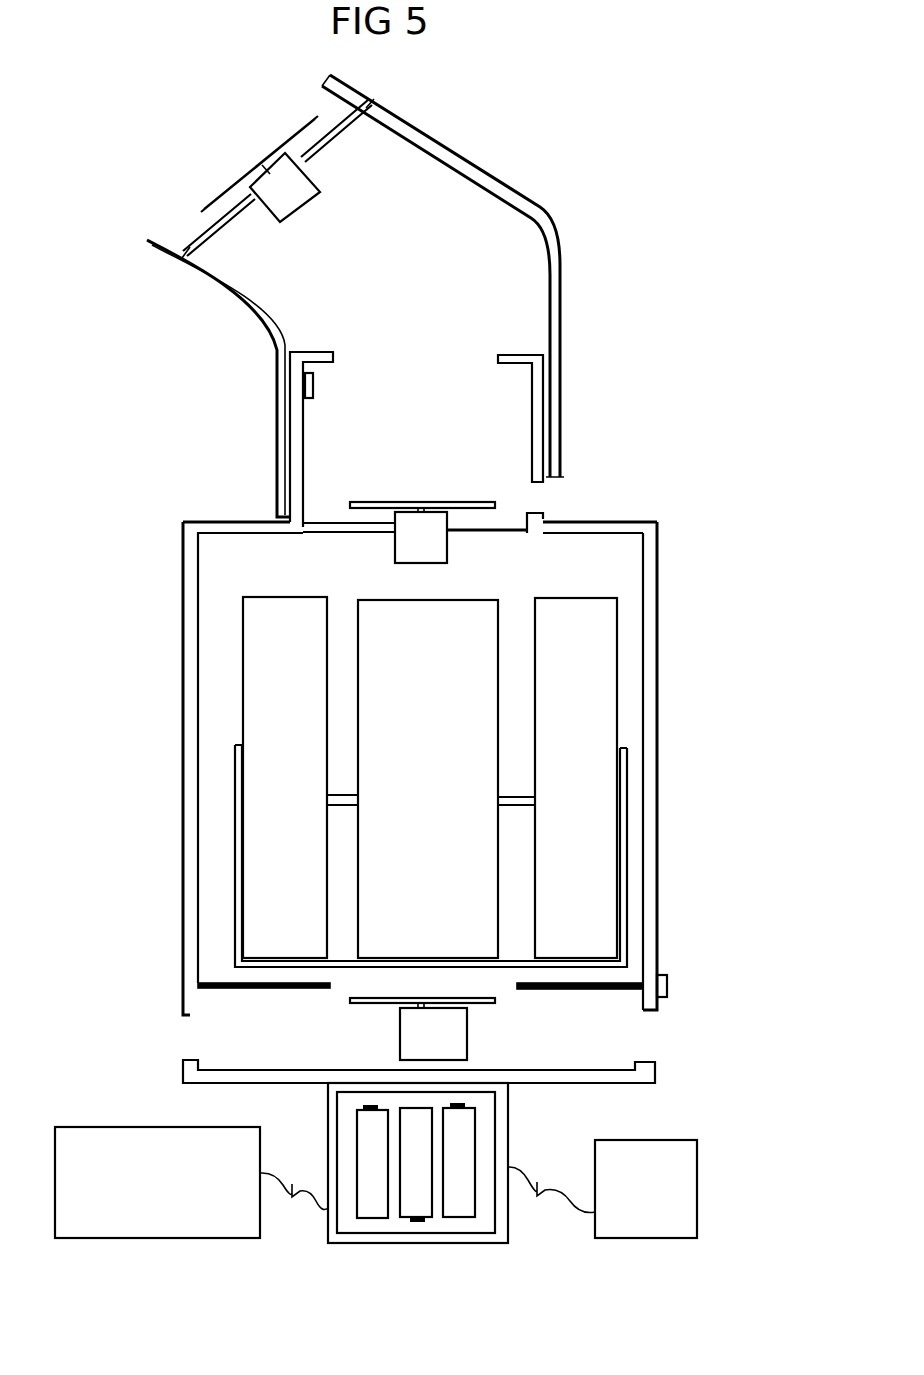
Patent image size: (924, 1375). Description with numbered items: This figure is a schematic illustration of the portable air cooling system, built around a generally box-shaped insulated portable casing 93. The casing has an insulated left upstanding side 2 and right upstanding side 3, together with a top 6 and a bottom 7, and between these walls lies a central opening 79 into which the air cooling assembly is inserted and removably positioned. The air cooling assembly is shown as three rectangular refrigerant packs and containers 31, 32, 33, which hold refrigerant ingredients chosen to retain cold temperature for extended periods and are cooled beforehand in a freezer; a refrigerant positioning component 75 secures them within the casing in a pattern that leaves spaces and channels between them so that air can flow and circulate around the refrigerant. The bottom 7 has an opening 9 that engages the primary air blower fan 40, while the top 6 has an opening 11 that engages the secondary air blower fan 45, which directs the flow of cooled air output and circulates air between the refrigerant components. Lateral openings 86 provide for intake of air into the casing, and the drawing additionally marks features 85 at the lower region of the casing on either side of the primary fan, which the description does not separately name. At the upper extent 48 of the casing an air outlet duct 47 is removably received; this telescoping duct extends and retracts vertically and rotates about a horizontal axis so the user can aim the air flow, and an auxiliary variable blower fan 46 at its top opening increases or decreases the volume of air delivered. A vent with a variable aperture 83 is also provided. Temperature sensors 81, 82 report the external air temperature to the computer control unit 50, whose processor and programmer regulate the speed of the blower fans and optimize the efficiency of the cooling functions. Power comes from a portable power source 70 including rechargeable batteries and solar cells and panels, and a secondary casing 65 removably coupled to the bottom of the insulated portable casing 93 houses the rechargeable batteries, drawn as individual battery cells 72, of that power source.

The left upstanding side 2 is at (183, 698).
The right upstanding side 3 is at (660, 657).
The top 6 is at (237, 517).
The bottom 7 is at (630, 1090).
The bottom opening 9 is at (502, 983).
The top opening 11 is at (328, 547).
The rectangular refrigerant pack 31 is at (587, 714).
The rectangular refrigerant pack 32 is at (437, 722).
The rectangular refrigerant pack 33 is at (291, 712).
The primary air blower fan 40 is at (447, 1049).
The secondary air blower fan 45 is at (435, 555).
The auxiliary variable blower fan 46 is at (275, 193).
The air outlet duct 47 is at (561, 287).
The upper extent 48 is at (540, 420).
The computer control unit 50 is at (656, 1207).
The secondary casing 65 is at (515, 1130).
The portable power source 70 is at (152, 1201).
The battery cell 72 is at (380, 1138).
The refrigerant positioning component 75 is at (627, 827).
The central opening 79 is at (623, 568).
The temperature sensor 81 is at (305, 383).
The temperature sensor 82 is at (667, 985).
The variable aperture 83 is at (555, 497).
The air gap 85 is at (740, 1010).
The lateral openings 86 is at (690, 1037).
The insulated portable casing 93 is at (657, 728).